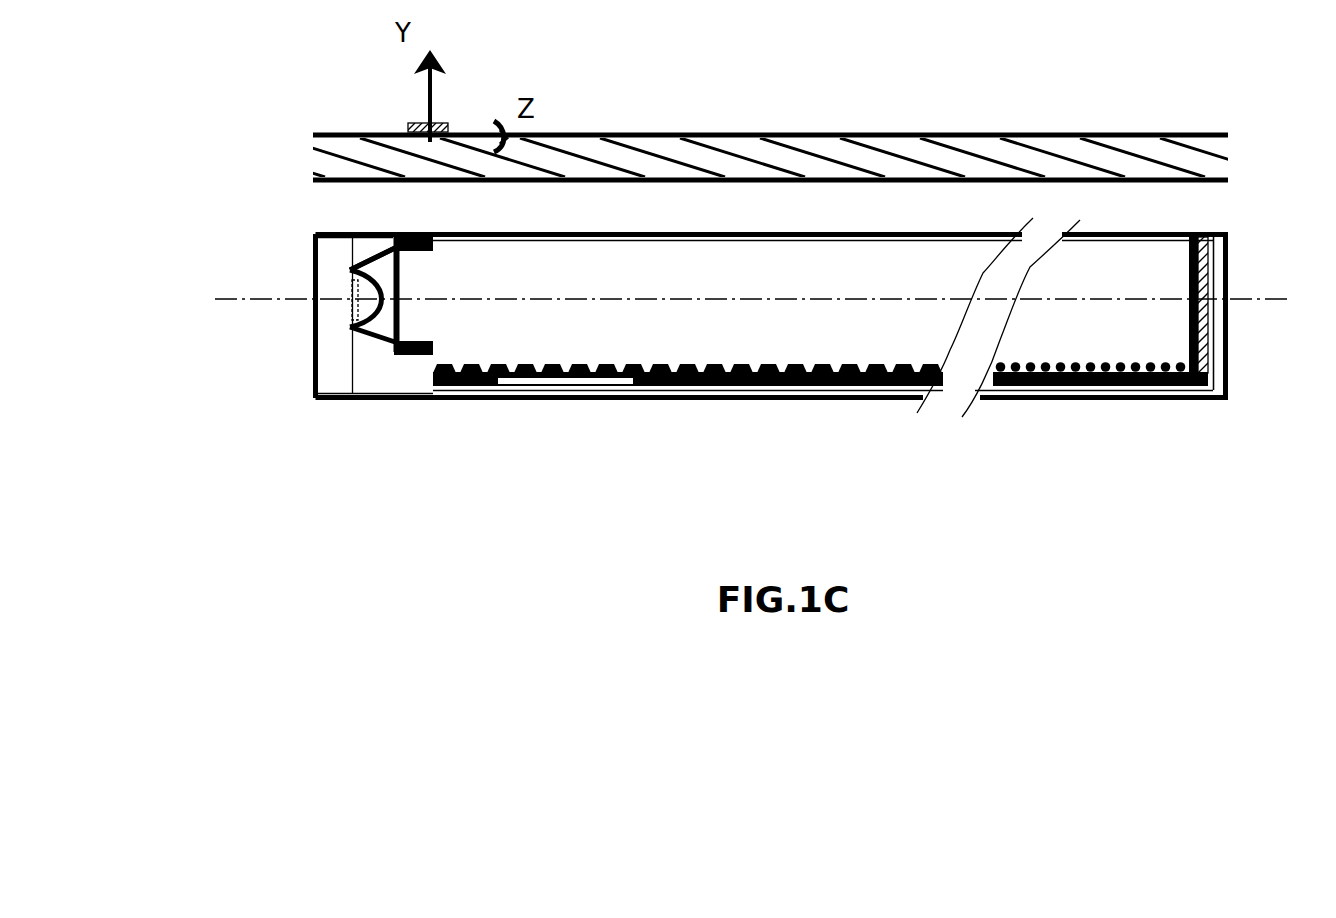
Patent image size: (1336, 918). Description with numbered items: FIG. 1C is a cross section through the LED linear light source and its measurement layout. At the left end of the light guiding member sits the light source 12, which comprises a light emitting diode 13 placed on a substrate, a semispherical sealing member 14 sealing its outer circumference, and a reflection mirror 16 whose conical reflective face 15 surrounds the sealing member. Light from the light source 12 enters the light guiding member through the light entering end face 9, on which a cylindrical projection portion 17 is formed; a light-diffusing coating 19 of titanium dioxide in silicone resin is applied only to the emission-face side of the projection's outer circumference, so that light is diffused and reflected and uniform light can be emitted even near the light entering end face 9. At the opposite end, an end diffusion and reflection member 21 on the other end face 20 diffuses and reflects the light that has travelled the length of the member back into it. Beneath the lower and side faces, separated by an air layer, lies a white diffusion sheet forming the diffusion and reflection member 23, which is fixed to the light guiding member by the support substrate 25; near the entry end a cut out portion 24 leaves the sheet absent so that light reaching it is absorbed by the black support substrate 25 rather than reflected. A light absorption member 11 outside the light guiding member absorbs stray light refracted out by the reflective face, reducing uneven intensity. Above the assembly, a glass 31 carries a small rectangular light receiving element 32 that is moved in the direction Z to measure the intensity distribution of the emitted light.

The light entering end face 9 is at (363, 230).
The light absorption member 11 is at (570, 395).
The light source 12 is at (358, 403).
The light emitting diode 13 is at (350, 292).
The semispherical sealing member 14 is at (353, 325).
The conical reflective face 15 is at (353, 353).
The reflection mirror 16 is at (403, 372).
The projection portion 17 is at (420, 268).
The coating 19 is at (340, 232).
The other end face 20 is at (1197, 240).
The end diffusion and reflection member 21 is at (1213, 310).
The diffusion and reflection member 23 is at (1093, 401).
The cut out portion 24 is at (610, 400).
The support substrate 25 is at (1143, 401).
The glass 31 is at (1015, 133).
The light receiving element 32 is at (452, 121).